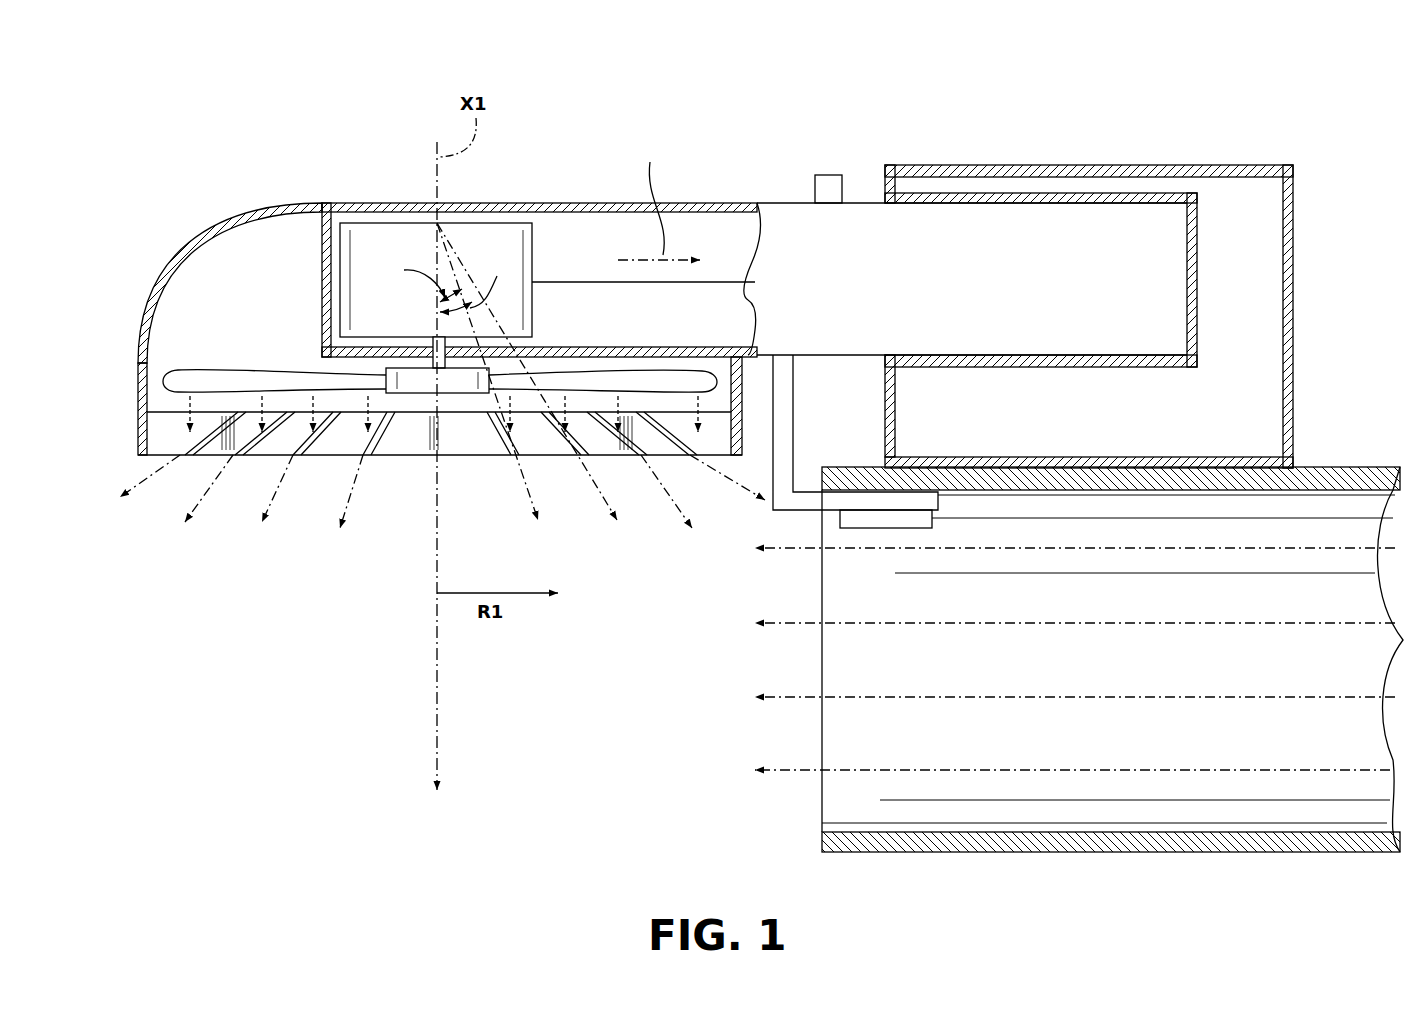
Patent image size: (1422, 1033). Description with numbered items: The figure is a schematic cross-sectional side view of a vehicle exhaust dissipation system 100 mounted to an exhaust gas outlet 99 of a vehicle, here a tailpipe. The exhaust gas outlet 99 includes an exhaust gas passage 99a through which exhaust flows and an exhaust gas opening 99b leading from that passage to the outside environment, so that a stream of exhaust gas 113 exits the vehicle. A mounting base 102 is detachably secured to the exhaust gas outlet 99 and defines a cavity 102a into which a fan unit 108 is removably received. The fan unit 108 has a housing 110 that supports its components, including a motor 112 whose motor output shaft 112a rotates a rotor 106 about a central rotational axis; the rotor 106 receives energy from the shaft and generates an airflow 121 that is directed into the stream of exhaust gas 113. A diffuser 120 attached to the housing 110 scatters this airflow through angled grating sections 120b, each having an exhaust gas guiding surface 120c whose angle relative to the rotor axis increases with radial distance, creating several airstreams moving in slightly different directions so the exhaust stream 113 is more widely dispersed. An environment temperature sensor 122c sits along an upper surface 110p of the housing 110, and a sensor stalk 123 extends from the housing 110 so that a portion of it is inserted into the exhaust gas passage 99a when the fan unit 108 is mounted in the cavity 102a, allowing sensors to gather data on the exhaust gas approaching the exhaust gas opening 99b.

The vehicle exhaust dissipation system 100 is at (1272, 128).
The mounting base 102 is at (1048, 163).
The cavity 102a is at (1124, 192).
The rotor 106 is at (177, 380).
The fan unit 108 is at (375, 200).
The housing 110 is at (775, 200).
The upper surface 110p is at (543, 200).
The motor 112 is at (380, 240).
The motor output shaft 112a is at (415, 360).
The stream of exhaust gas 113 is at (1318, 548).
The diffuser 120 is at (133, 442).
The angled grating sections 120b is at (333, 455).
The exhaust gas guiding surface 120c is at (310, 440).
The airflow 121 is at (273, 500).
The environment temperature sensor 122c is at (830, 185).
The sensor stalk 123 is at (770, 470).
The exhaust gas outlet 99 is at (1088, 853).
The exhaust gas passage 99a is at (1207, 740).
The exhaust gas opening 99b is at (822, 795).